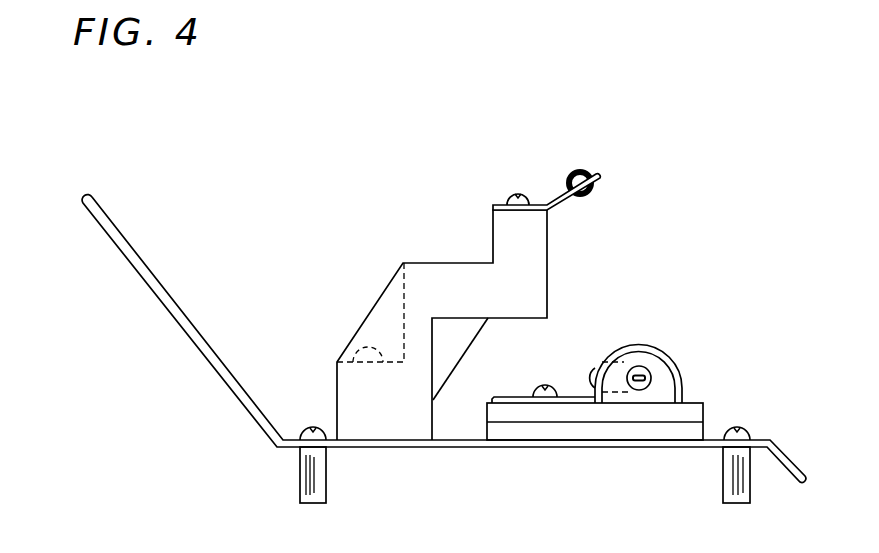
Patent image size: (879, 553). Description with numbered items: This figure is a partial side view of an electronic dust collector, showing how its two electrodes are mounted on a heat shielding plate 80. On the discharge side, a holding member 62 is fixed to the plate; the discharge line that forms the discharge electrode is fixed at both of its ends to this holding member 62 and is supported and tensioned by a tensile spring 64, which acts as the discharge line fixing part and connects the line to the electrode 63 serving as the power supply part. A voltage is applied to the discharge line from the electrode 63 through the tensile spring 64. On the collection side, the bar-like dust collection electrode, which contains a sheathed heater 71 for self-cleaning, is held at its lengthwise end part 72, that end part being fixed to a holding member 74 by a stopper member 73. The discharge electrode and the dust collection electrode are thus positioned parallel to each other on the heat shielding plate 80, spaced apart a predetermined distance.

The holding member 62 is at (432, 275).
The electrode 63 is at (567, 204).
The tensile spring 64 is at (595, 193).
The sheathed heater 71 is at (586, 367).
The lengthwise end part 72 is at (667, 387).
The stopper member 73 is at (677, 361).
The holding member 74 is at (600, 417).
The heat shielding plate 80 is at (467, 447).